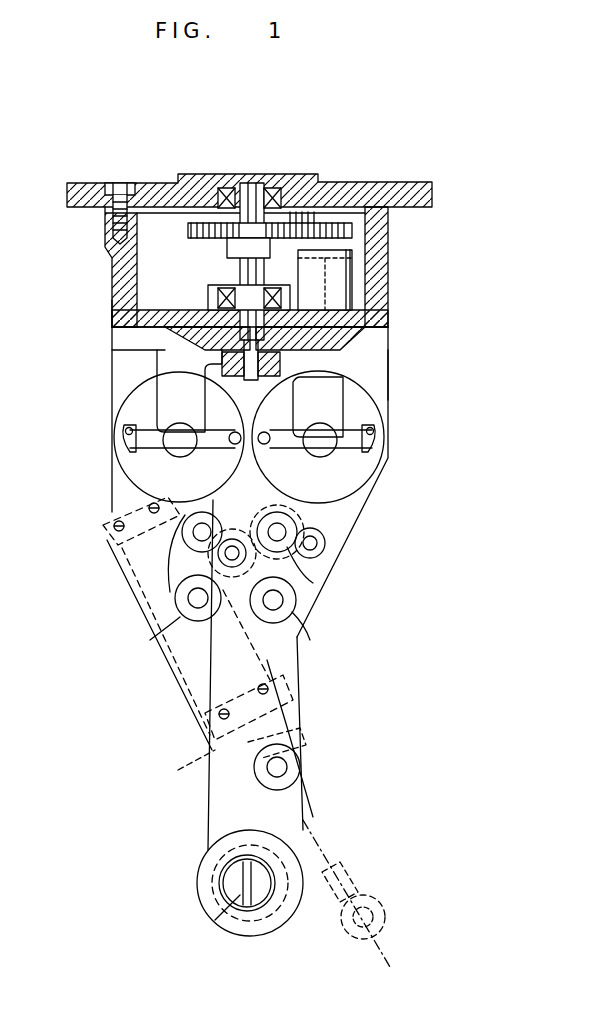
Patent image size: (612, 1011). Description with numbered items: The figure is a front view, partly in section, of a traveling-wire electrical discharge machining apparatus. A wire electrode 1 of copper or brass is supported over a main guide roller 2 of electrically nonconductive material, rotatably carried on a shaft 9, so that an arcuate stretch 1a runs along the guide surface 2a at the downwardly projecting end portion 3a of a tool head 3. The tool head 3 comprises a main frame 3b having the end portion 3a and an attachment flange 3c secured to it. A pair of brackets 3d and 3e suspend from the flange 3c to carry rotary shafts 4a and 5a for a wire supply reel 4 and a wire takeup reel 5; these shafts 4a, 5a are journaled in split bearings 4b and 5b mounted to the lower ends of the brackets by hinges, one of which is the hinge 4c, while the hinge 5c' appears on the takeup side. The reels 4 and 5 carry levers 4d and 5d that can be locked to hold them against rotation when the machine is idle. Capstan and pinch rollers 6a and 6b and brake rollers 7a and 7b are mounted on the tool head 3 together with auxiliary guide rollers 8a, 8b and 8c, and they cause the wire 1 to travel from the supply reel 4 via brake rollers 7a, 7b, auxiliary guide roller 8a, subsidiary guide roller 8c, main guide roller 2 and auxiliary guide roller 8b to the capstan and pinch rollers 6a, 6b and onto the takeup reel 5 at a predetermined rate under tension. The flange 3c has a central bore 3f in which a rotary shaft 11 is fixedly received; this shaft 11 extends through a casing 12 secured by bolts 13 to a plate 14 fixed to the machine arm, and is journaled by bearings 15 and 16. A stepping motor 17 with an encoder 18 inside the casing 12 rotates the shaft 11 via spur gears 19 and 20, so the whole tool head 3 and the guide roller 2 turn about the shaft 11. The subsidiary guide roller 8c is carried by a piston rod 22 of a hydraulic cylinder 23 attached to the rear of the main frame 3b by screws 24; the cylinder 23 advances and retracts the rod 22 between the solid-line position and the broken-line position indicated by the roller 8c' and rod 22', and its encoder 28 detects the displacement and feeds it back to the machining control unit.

The wire electrode 1 is at (213, 693).
The arcuate stretch 1a is at (221, 935).
The main guide roller 2 is at (290, 918).
The guide surface 2a is at (268, 918).
The tool head 3 is at (415, 350).
The end portion 3a is at (198, 830).
The main frame 3b is at (388, 368).
The attachment flange 3c is at (112, 337).
The bracket 3d is at (330, 407).
The bracket 3e is at (170, 383).
The central bore 3f is at (270, 378).
The wire supply reel 4 is at (368, 423).
The rotary shaft 4a is at (350, 450).
The split bearing 4b is at (320, 450).
The hinge 4c is at (302, 470).
The lever 4d is at (376, 440).
The wire takeup reel 5 is at (145, 398).
The rotary shaft 5a is at (150, 428).
The split bearing 5b is at (168, 460).
The hub 5c' is at (189, 461).
The lever 5d is at (124, 433).
The capstan roller 6a is at (178, 588).
The pinch roller 6b is at (185, 548).
The brake roller 7a is at (296, 596).
The brake roller 7b is at (325, 548).
The auxiliary guide roller 8a is at (314, 633).
The auxiliary guide roller 8b is at (149, 642).
The subsidiary guide roller 8c is at (306, 738).
The link roller alternate position 8c' is at (392, 925).
The shaft 9 is at (230, 890).
The rotary shaft 11 is at (250, 181).
The casing 12 is at (388, 318).
The bolt 13 is at (112, 183).
The plate 14 is at (452, 172).
The bearing 15 is at (226, 190).
The bearing 16 is at (226, 288).
The stepping motor 17 is at (348, 278).
The encoder 18 is at (352, 260).
The spur gear 19 is at (323, 222).
The spur gear 20 is at (287, 222).
The piston rod 22 is at (297, 739).
The bracket alternate position 22' is at (362, 893).
The hydraulic cylinder 23 is at (200, 700).
The screw 24 is at (110, 535).
The encoder 28 is at (182, 766).